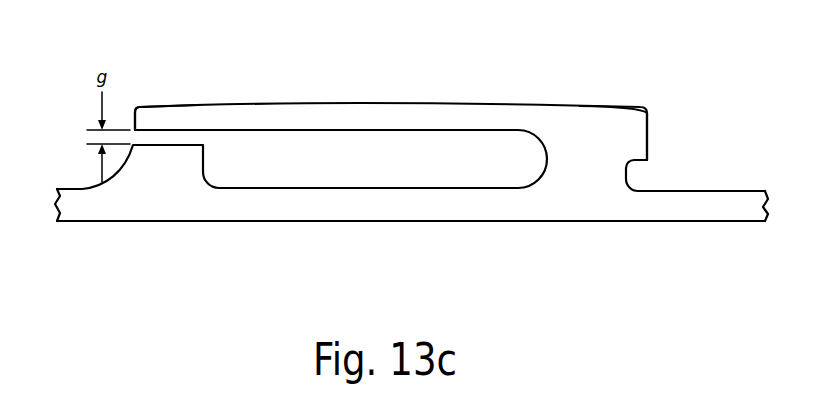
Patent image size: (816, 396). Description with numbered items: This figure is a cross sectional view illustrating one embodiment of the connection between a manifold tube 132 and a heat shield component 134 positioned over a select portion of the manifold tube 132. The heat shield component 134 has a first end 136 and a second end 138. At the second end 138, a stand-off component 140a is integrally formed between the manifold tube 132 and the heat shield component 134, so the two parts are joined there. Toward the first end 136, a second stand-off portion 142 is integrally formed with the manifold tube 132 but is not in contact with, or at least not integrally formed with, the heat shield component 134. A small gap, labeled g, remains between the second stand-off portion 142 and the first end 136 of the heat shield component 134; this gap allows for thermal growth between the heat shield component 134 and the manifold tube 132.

The manifold tube 132 is at (385, 229).
The heat shield component 134 is at (315, 94).
The first end 136 is at (182, 104).
The second end 138 is at (603, 117).
The stand-off component 140a is at (600, 183).
The second stand-off portion 142 is at (163, 162).